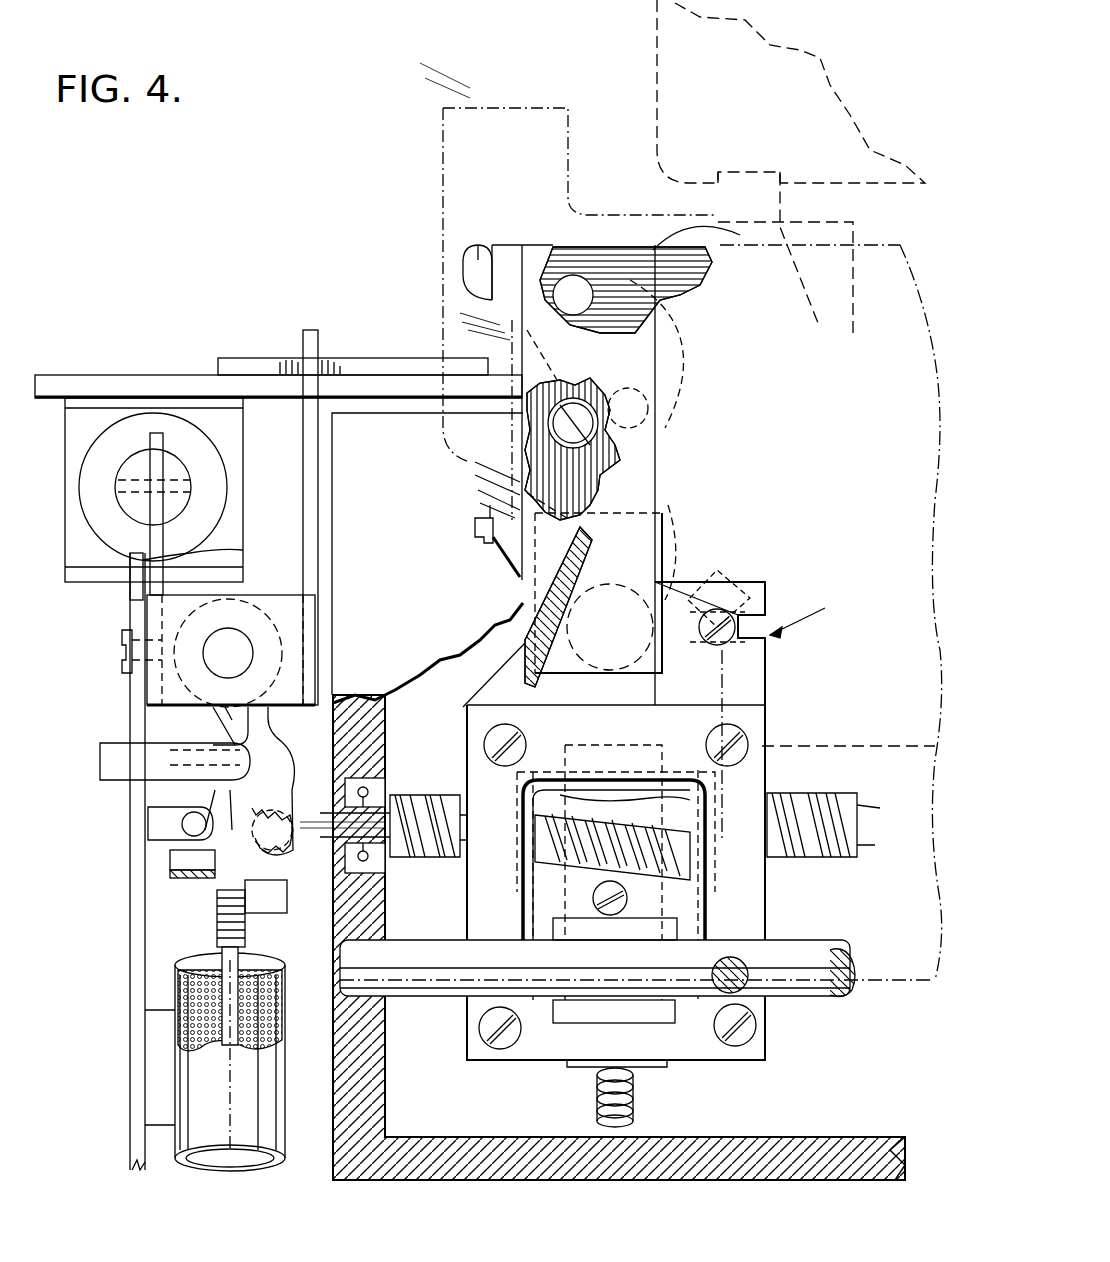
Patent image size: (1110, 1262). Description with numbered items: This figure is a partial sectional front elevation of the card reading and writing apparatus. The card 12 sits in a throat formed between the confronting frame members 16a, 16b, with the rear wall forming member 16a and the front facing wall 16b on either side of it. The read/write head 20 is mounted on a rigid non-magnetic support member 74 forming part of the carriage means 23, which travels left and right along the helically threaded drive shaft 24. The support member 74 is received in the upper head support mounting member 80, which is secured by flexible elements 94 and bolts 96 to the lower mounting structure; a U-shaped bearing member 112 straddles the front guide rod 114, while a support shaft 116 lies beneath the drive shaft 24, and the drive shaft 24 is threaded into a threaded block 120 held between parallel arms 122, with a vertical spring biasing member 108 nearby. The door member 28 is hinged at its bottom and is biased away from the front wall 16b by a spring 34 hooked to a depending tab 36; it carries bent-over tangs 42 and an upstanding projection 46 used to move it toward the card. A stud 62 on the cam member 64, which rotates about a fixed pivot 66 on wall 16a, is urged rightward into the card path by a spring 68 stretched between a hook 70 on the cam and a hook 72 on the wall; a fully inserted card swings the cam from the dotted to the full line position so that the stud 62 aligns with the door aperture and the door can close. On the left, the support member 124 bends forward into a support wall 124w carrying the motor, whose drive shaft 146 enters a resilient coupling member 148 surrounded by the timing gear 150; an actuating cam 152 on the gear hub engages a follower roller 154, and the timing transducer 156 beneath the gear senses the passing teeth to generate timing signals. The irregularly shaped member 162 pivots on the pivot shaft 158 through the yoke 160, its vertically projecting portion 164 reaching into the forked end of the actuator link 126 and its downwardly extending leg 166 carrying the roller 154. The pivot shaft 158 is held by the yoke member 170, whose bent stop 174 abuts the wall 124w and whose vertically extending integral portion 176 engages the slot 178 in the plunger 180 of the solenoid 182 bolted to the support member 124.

The card 12 is at (657, 50).
The frame member 16a is at (440, 650).
The frame member 16b is at (680, 290).
The read/write head 20 is at (644, 542).
The carriage means 23 is at (812, 609).
The helically threaded drive shaft 24 is at (440, 858).
The door member 28 is at (605, 512).
The spring 34 is at (625, 1105).
The depending tab 36 is at (652, 1068).
The tangs 42 is at (755, 192).
The upstanding projection 46 is at (483, 108).
The stud 62 is at (626, 372).
The cam member 64 is at (645, 350).
The fixed pivot 66 is at (572, 335).
The spring 68 is at (480, 480).
The hook 70 is at (480, 240).
The hook 72 is at (475, 533).
The support member 74 is at (667, 540).
The upper head support mounting member 80 is at (745, 688).
The flexible elements 94 is at (542, 942).
The bolts 96 is at (490, 745).
The vertical spring biasing member 108 is at (643, 745).
The U-shaped bearing member 112 is at (580, 1000).
The front guide rod 114 is at (443, 945).
The support shaft 116 is at (835, 940).
The threaded block 120 is at (565, 805).
The parallel arms 122 is at (522, 785).
The support member 124 is at (127, 375).
The left hand support wall 124w is at (140, 1170).
The actuator link 126 is at (230, 358).
The motor drive shaft 146 is at (158, 825).
The coupling member 148 is at (195, 880).
The timing gear 150 is at (215, 925).
The actuating cam 152 is at (268, 915).
The follower roller 154 is at (288, 852).
The timing transducer 156 is at (230, 1118).
The pivot shaft 158 is at (245, 650).
The yoke 160 is at (290, 675).
The irregularly shaped member 162 is at (318, 548).
The vertically projecting portion 164 is at (316, 330).
The downwardly extending leg 166 is at (280, 770).
The yoke member 170 is at (172, 605).
The stop 174 is at (106, 768).
The vertically extending integral portion 176 is at (165, 552).
The slot 178 is at (175, 470).
The plunger 180 is at (135, 470).
The solenoid 182 is at (100, 455).